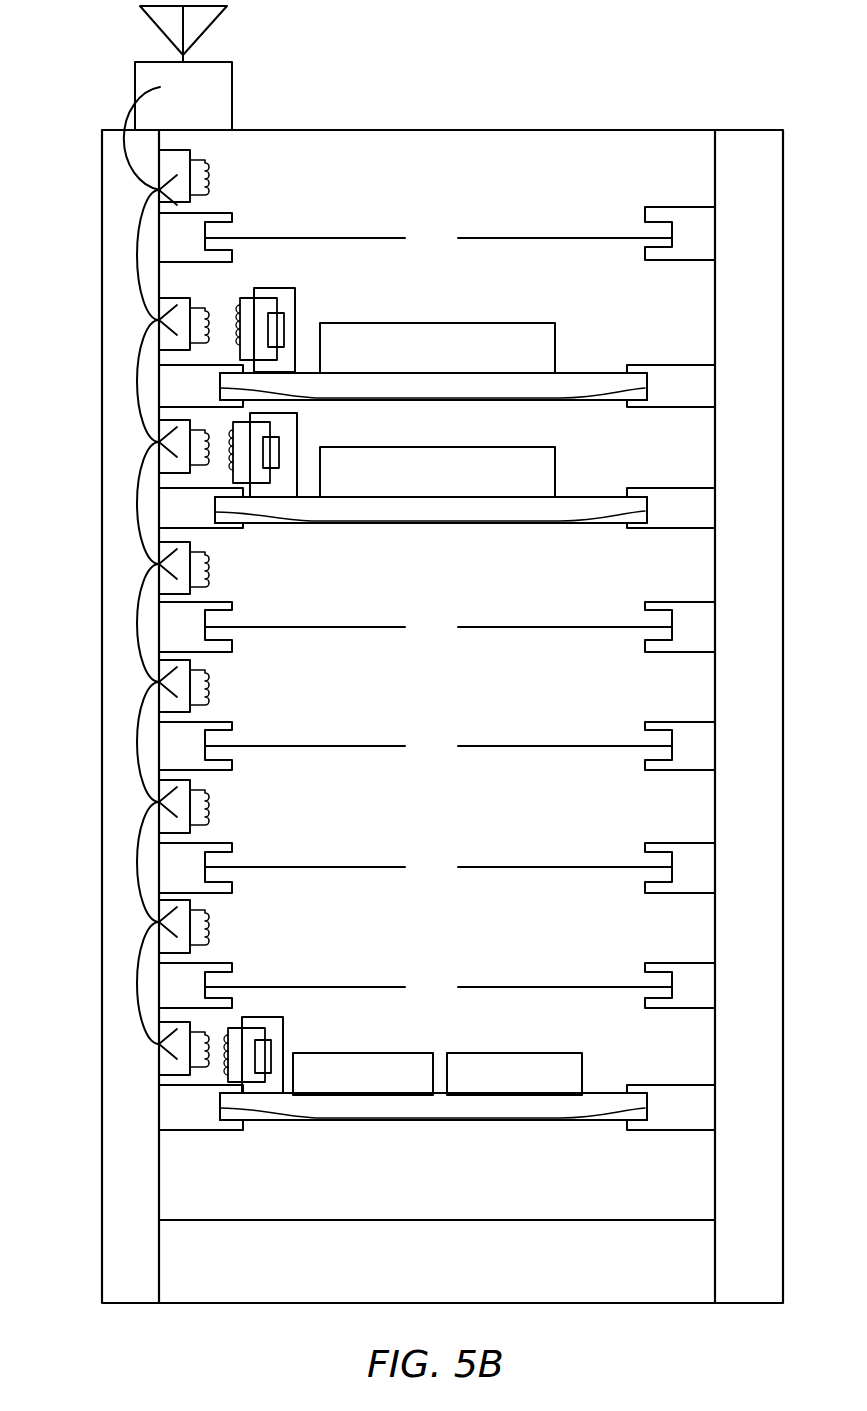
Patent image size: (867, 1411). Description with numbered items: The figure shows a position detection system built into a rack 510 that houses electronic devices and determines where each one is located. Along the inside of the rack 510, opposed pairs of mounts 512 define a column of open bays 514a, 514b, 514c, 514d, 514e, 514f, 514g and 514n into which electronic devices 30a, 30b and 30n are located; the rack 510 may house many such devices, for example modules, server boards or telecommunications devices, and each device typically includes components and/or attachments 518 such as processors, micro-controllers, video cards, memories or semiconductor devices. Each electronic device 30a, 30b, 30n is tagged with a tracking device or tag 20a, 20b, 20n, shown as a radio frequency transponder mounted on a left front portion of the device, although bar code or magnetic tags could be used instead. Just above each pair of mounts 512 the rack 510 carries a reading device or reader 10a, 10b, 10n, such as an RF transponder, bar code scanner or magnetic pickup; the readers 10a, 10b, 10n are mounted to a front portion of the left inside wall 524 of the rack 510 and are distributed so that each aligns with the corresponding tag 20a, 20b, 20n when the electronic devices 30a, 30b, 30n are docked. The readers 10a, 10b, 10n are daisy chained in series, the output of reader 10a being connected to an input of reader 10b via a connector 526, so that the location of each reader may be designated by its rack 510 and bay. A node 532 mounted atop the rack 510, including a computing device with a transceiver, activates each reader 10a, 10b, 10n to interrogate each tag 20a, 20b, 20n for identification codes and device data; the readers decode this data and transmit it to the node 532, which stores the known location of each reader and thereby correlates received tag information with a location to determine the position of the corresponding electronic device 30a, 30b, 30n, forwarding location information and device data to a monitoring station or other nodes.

The rack 510 is at (662, 104).
The mounts 512 is at (197, 251).
The bay 514a is at (438, 238).
The bay 514b is at (570, 400).
The bay 514c is at (570, 523).
The bay 514d is at (438, 627).
The bay 514e is at (438, 746).
The bay 514f is at (438, 867).
The bay 514g is at (438, 987).
The bay 514n is at (570, 1120).
The components and/or attachments 518 is at (453, 358).
The left inside wall 524 is at (162, 1167).
The connector 526 is at (137, 250).
The node 532 is at (221, 121).
The reader 10a is at (175, 167).
The reader 10b is at (173, 302).
The reader 10n is at (159, 1040).
The tag 20a is at (283, 297).
The tag 20b is at (288, 440).
The tag 20n is at (287, 1032).
The electronic device 30a is at (600, 383).
The electronic device 30b is at (600, 507).
The electronic device 30n is at (612, 1100).